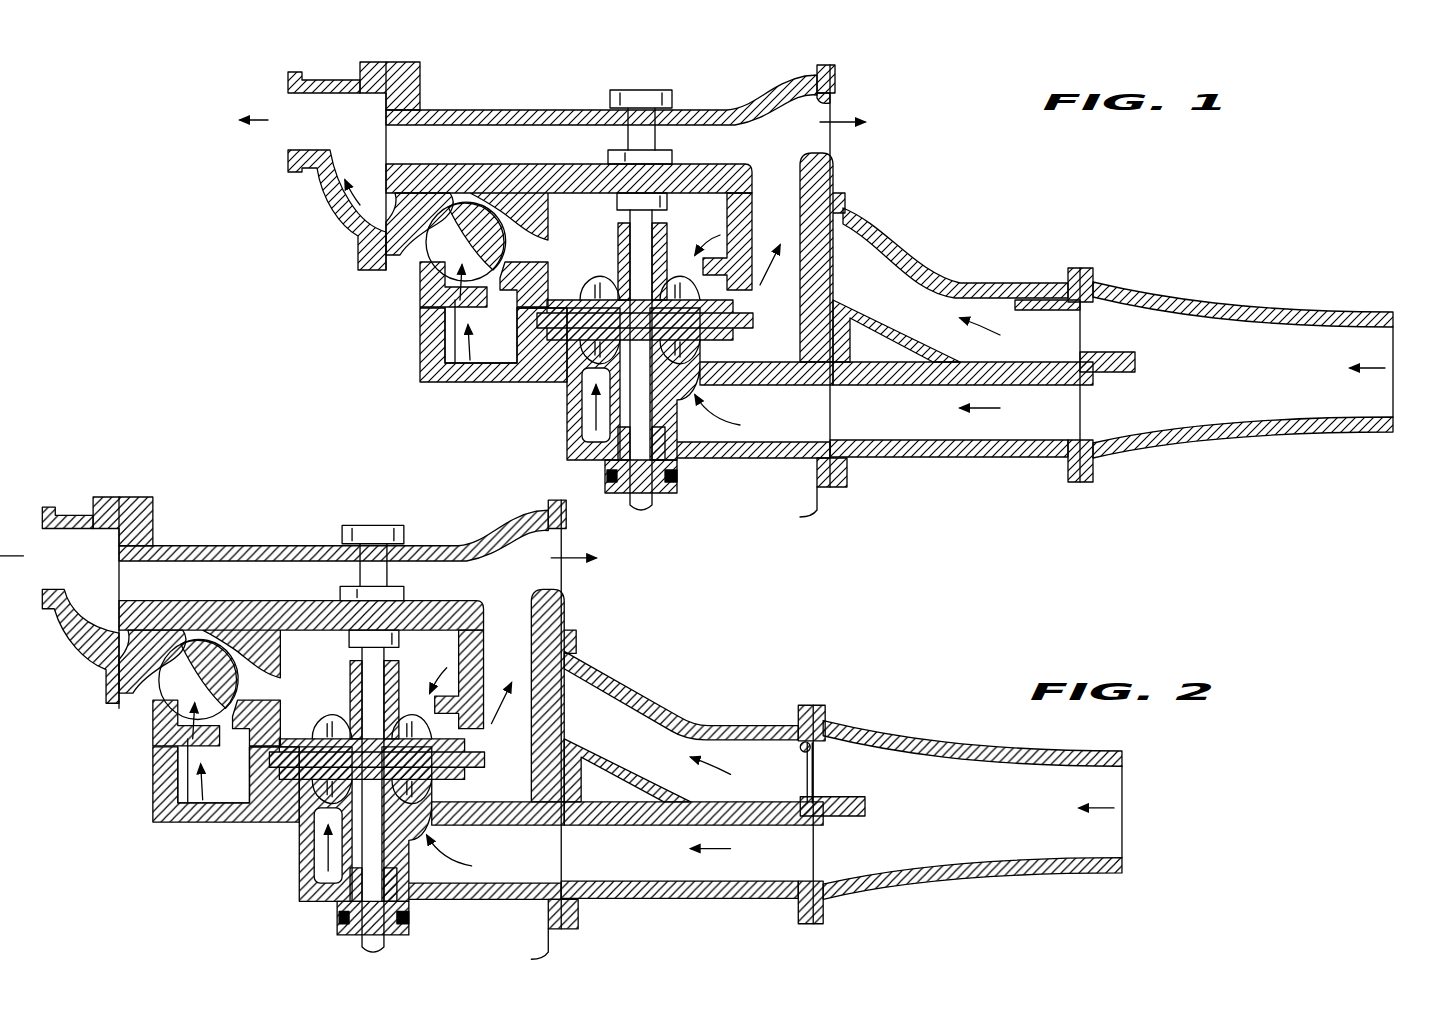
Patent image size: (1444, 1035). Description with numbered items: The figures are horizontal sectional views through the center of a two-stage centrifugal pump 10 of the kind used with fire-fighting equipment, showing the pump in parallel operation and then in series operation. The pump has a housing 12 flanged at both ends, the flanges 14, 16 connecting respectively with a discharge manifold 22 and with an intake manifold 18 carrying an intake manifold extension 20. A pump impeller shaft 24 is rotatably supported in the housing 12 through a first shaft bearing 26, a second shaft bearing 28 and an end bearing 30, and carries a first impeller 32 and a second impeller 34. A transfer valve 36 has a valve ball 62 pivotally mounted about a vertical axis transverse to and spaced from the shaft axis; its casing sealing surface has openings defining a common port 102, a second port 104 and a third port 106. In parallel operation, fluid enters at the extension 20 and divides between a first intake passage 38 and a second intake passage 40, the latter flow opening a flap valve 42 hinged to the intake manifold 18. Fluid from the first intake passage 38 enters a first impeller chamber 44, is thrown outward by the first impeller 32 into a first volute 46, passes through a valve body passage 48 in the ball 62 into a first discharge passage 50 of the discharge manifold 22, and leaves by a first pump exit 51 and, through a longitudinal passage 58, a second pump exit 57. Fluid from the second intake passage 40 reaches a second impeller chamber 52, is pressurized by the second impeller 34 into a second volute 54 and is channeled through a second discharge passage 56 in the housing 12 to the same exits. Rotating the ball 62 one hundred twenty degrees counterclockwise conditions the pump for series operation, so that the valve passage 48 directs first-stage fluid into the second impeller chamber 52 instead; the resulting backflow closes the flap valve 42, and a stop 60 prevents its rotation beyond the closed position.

In FIG. 1, the centrifugal pump 10 is at (230, 295).
In FIG. 2, the centrifugal pump 10 is at (255, 463).
In FIG. 1, the housing 12 is at (425, 382).
In FIG. 2, the housing 12 is at (198, 797).
In FIG. 1, the flange 14 is at (418, 70).
In FIG. 2, the flange 14 is at (149, 596).
In FIG. 1, the flange 16 is at (818, 68).
In FIG. 2, the flange 16 is at (534, 721).
In FIG. 1, the intake manifold 18 is at (1000, 292).
In FIG. 2, the intake manifold 18 is at (693, 868).
In FIG. 1, the intake manifold extension 20 is at (1280, 302).
In FIG. 2, the intake manifold extension 20 is at (972, 824).
In FIG. 1, the discharge manifold 22 is at (305, 78).
In FIG. 2, the discharge manifold 22 is at (67, 492).
In FIG. 1, the pump impeller shaft 24 is at (628, 140).
In FIG. 2, the pump impeller shaft 24 is at (363, 739).
In FIG. 1, the first shaft bearing 26 is at (680, 480).
In FIG. 2, the first shaft bearing 26 is at (407, 922).
In FIG. 1, the second shaft bearing 28 is at (668, 157).
In FIG. 2, the second shaft bearing 28 is at (339, 606).
In FIG. 1, the end bearing 30 is at (650, 92).
In FIG. 2, the end bearing 30 is at (373, 536).
In FIG. 1, the first impeller 32 is at (578, 362).
In FIG. 2, the first impeller 32 is at (300, 824).
In FIG. 1, the second impeller 34 is at (576, 298).
In FIG. 2, the second impeller 34 is at (342, 789).
In FIG. 1, the transfer valve 36 is at (428, 278).
In FIG. 2, the transfer valve 36 is at (137, 712).
In FIG. 1, the first intake passage 38 is at (920, 455).
In FIG. 2, the first intake passage 38 is at (679, 891).
In FIG. 1, the second intake passage 40 is at (935, 295).
In FIG. 2, the second intake passage 40 is at (681, 712).
In FIG. 1, the flap valve 42 is at (1063, 290).
In FIG. 2, the flap valve 42 is at (831, 810).
In FIG. 1, the first impeller chamber 44 is at (720, 385).
In FIG. 2, the first impeller chamber 44 is at (473, 824).
In FIG. 1, the first volute 46 is at (445, 350).
In FIG. 2, the first volute 46 is at (170, 775).
In FIG. 1, the valve body passage 48 is at (440, 300).
In FIG. 2, the valve body passage 48 is at (194, 723).
In FIG. 1, the first discharge passage 50 is at (345, 212).
In FIG. 2, the first discharge passage 50 is at (59, 629).
In FIG. 1, the first pump exit 51 is at (288, 140).
In FIG. 1, the second impeller chamber 52 is at (740, 240).
In FIG. 2, the second impeller chamber 52 is at (451, 679).
In FIG. 1, the second volute 54 is at (820, 290).
In FIG. 2, the second volute 54 is at (625, 755).
In FIG. 1, the second discharge passage 56 is at (815, 190).
In FIG. 2, the second discharge passage 56 is at (560, 680).
In FIG. 1, the second pump exit 57 is at (838, 103).
In FIG. 1, the longitudinal passage 58 is at (512, 120).
In FIG. 2, the longitudinal passage 58 is at (333, 535).
In FIG. 1, the stop 60 is at (1090, 360).
In FIG. 2, the stop 60 is at (870, 762).
In FIG. 1, the valve ball 62 is at (425, 262).
In FIG. 2, the valve ball 62 is at (198, 689).
In FIG. 1, the common port 102 is at (465, 365).
In FIG. 2, the common port 102 is at (135, 767).
In FIG. 1, the second port 104 is at (420, 190).
In FIG. 2, the second port 104 is at (153, 629).
In FIG. 1, the third port 106 is at (525, 205).
In FIG. 2, the third port 106 is at (301, 624).